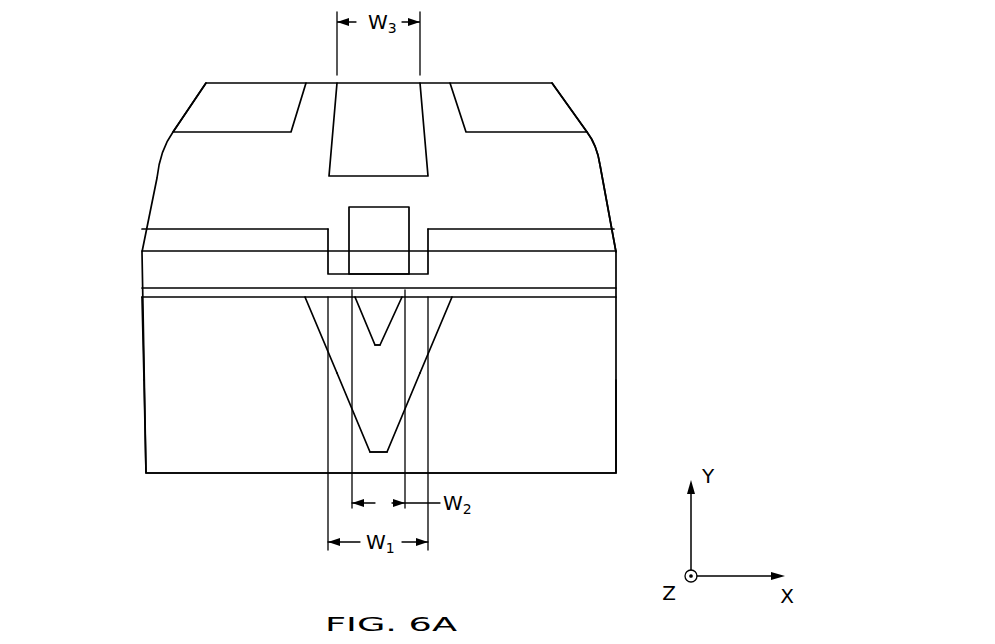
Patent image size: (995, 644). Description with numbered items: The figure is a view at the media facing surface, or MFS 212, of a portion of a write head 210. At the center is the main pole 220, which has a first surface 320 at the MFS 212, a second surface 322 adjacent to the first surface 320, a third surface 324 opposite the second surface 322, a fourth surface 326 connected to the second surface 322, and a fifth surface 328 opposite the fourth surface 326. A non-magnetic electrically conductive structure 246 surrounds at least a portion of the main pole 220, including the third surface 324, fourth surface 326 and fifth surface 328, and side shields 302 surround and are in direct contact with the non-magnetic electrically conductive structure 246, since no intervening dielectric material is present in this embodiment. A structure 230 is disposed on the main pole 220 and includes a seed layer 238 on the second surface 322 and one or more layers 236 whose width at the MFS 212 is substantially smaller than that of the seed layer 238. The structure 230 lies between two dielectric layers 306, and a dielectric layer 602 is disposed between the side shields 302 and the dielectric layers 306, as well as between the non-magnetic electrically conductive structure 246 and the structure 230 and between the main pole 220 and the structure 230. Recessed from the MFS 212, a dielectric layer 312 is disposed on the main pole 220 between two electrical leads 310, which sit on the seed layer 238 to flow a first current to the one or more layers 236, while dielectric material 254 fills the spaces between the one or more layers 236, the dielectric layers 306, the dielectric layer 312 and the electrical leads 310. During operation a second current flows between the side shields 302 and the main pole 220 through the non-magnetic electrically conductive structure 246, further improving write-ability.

The write head 210 is at (122, 70).
The electrical leads 310 is at (227, 90).
The dielectric layer 312 is at (387, 92).
The structure 230 is at (418, 210).
The one or more layers 236 is at (358, 259).
The dielectric material 254 is at (595, 202).
The dielectric layers 306 is at (160, 271).
The dielectric layer 602 is at (608, 294).
The seed layer 238 is at (344, 282).
The second surface 322 is at (392, 298).
The fourth surface 326 is at (366, 324).
The fifth surface 328 is at (395, 310).
The main pole 220 is at (385, 318).
The third surface 324 is at (378, 333).
The first surface 320 is at (362, 318).
The non-magnetic electrically conductive structure 246 is at (382, 395).
The MFS 212 is at (165, 338).
The side shields 302 is at (162, 408).